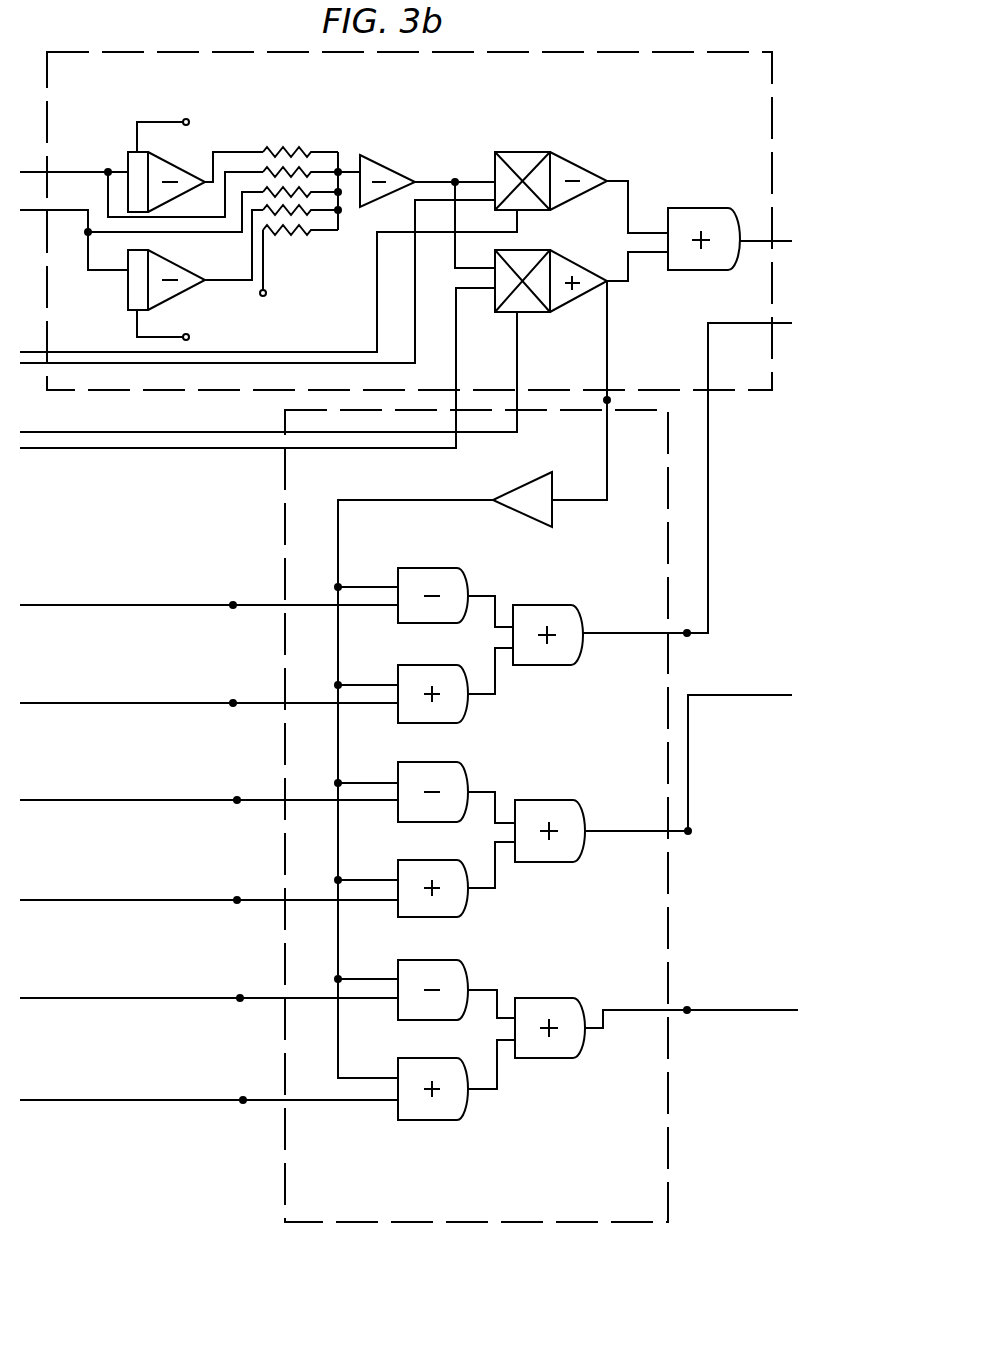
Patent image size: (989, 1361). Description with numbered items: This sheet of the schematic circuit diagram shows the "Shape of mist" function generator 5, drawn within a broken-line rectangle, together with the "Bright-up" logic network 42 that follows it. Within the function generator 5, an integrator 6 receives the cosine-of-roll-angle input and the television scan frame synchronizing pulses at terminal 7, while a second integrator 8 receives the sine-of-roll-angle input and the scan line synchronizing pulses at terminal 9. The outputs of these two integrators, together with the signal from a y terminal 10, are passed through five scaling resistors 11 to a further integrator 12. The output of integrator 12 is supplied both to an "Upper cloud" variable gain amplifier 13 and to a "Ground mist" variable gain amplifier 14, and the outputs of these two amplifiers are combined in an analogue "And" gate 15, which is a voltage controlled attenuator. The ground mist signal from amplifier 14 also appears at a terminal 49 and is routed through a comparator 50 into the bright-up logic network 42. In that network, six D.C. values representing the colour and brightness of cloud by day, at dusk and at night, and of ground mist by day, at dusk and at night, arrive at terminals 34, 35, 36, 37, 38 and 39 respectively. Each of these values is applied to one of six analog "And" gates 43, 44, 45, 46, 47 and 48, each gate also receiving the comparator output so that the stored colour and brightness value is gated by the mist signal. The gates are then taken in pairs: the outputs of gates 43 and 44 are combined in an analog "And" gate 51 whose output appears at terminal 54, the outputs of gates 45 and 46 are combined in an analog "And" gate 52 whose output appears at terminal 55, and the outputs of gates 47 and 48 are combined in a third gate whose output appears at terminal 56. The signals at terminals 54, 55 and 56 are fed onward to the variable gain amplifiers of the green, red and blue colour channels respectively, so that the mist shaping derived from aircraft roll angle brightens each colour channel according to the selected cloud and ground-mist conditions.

The shape of mist function generator 5 is at (748, 393).
The integrator 6 is at (169, 174).
The frame synchronizing pulse input terminal 7 is at (190, 122).
The integrator 8 is at (180, 284).
The line synchronizing pulse input terminal 9 is at (183, 336).
The y terminal 10 is at (266, 296).
The scaling resistors 11 is at (287, 148).
The integrator 12 is at (396, 167).
The upper cloud variable gain amplifier 13 is at (575, 160).
The ground mist variable gain amplifier 14 is at (577, 261).
The analogue And gate 15 is at (718, 207).
The terminal 34 is at (233, 603).
The terminal 35 is at (233, 701).
The terminal 36 is at (237, 798).
The terminal 37 is at (237, 898).
The terminal 38 is at (240, 996).
The terminal 39 is at (243, 1098).
The bright-up logic network 42 is at (297, 1155).
The analog And gate 43 is at (437, 558).
The analog And gate 44 is at (440, 655).
The analog And gate 45 is at (439, 755).
The analog And gate 46 is at (440, 852).
The analog And gate 47 is at (440, 953).
The analog And gate 48 is at (428, 1057).
The terminal 49 is at (611, 398).
The comparator 50 is at (530, 487).
The analog And gate 51 is at (541, 603).
The analog And gate 52 is at (543, 798).
The terminal 54 is at (690, 624).
The terminal 55 is at (690, 840).
The terminal 56 is at (690, 1018).